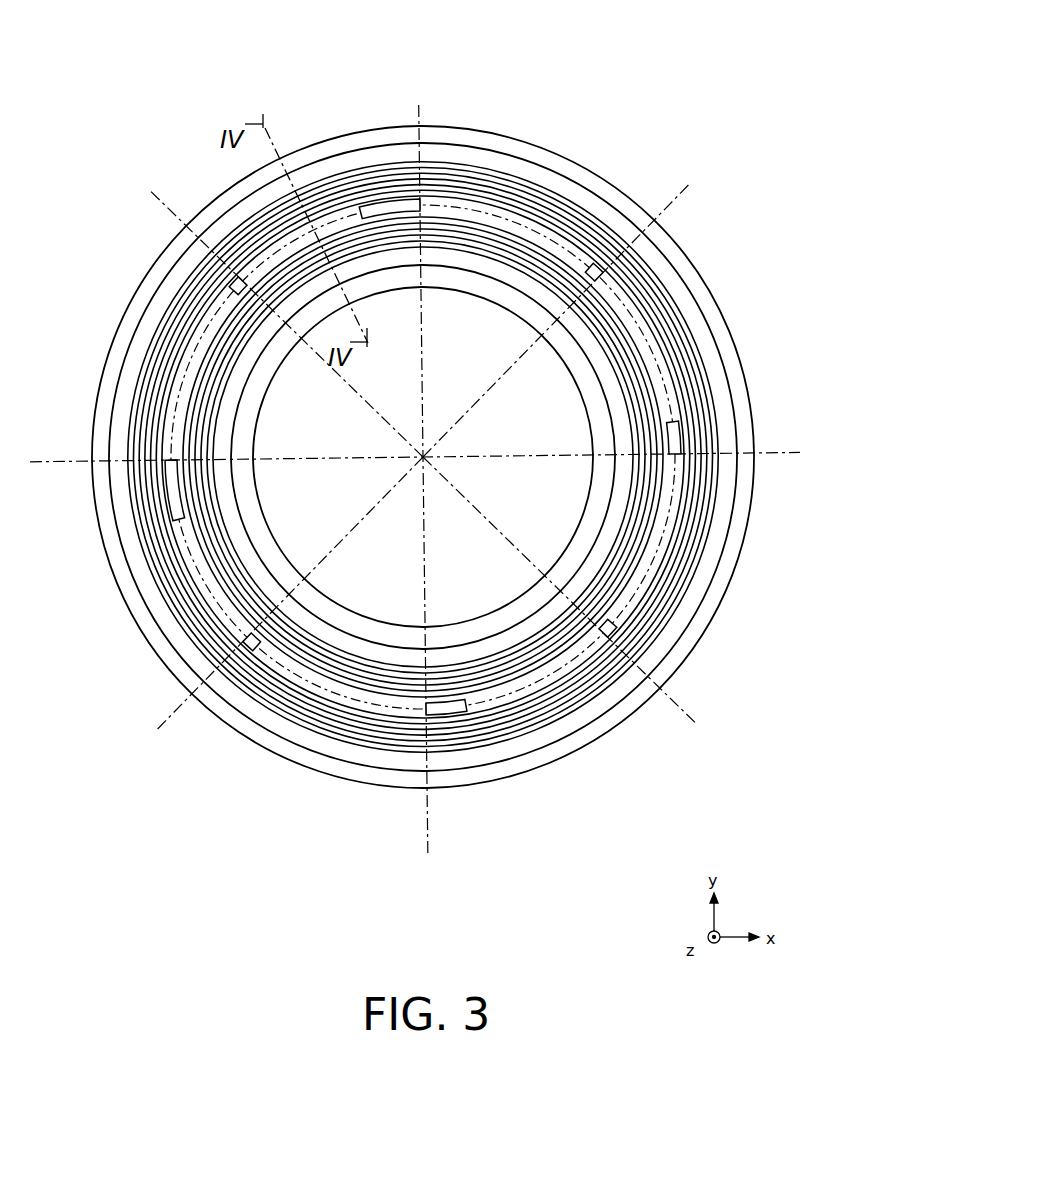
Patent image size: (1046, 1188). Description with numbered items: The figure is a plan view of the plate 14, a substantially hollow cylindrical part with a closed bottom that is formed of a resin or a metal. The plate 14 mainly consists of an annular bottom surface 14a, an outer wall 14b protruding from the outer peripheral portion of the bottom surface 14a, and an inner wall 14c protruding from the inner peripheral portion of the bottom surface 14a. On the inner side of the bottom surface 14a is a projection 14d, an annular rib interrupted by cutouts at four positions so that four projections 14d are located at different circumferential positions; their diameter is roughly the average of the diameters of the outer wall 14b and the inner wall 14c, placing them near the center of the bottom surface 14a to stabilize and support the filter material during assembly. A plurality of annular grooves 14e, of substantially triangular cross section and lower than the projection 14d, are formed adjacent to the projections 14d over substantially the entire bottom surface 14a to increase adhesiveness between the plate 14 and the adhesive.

The plate 14 is at (653, 90).
The bottom surface 14a is at (423, 457).
The outer wall 14b is at (423, 457).
The inner wall 14c is at (423, 457).
The projection 14d is at (423, 457).
The grooves 14e is at (423, 457).